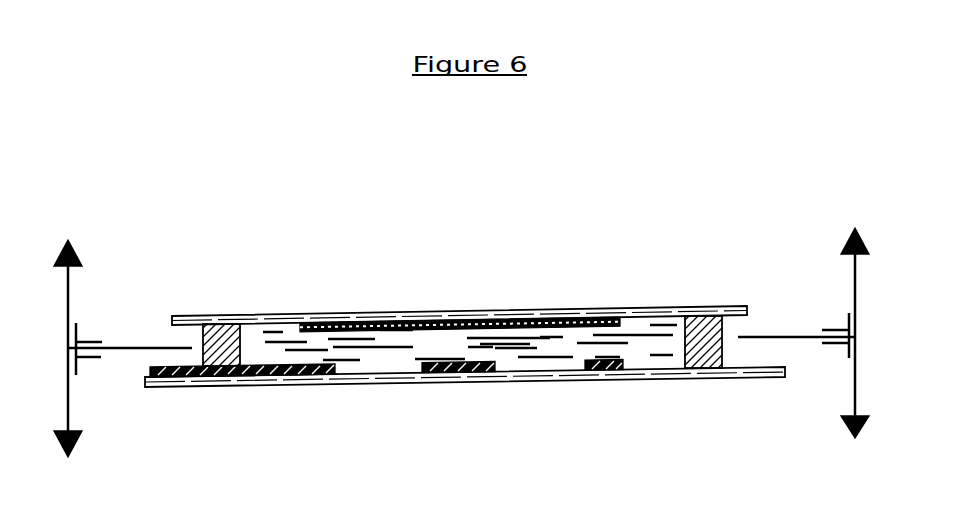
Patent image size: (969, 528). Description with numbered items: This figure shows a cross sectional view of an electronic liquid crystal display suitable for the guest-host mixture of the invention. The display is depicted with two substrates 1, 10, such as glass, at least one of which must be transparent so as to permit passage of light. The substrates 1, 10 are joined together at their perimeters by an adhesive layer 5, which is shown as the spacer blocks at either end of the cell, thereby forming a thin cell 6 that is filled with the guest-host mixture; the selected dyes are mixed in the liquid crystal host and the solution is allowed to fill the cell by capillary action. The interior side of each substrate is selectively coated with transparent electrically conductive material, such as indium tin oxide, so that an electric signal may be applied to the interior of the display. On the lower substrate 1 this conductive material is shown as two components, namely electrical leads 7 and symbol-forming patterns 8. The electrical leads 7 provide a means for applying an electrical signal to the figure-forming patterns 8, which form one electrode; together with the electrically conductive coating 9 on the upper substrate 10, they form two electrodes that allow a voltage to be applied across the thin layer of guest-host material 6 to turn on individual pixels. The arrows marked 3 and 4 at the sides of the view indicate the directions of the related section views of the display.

The substrate 1 is at (190, 388).
The section direction arrow for Figure 3 is at (461, 459).
The section direction arrow for Figure 4 is at (461, 309).
The adhesive layer 5 is at (203, 347).
The thin cell 6 is at (498, 350).
The electrical leads 7 is at (230, 388).
The symbol-forming patterns 8 is at (437, 378).
The electrically conductive coating 9 is at (462, 313).
The substrate 10 is at (243, 320).